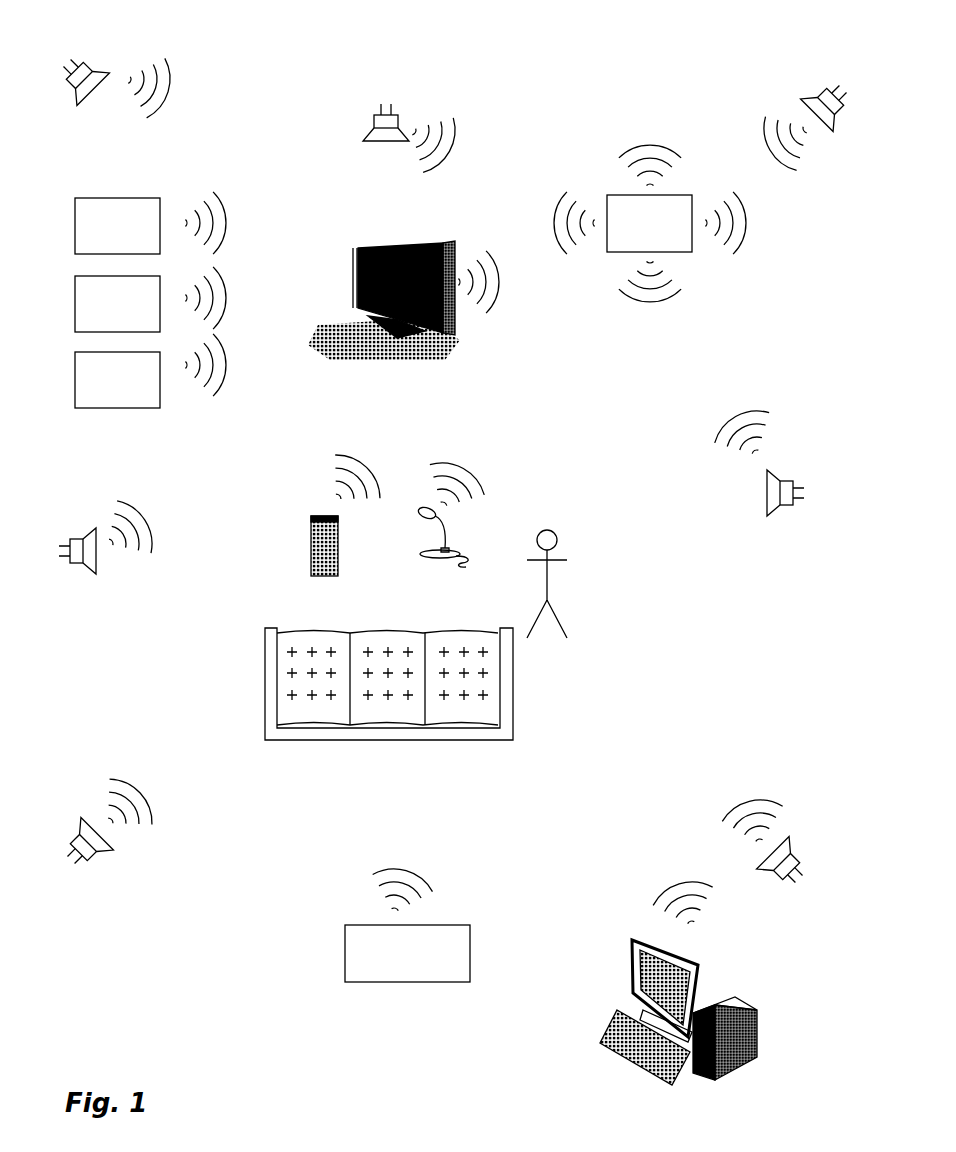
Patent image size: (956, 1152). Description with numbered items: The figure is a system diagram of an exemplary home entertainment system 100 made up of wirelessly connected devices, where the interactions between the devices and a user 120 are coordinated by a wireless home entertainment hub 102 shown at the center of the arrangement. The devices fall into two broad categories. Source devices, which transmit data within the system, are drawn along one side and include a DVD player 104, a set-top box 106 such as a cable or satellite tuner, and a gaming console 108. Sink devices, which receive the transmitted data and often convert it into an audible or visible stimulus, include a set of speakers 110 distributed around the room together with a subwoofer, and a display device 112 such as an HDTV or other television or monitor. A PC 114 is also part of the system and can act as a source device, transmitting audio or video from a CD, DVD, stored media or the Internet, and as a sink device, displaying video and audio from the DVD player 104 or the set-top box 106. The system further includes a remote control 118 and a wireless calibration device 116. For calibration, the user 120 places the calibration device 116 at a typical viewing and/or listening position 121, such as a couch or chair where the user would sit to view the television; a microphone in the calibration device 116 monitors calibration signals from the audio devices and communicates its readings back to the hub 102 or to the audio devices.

The home entertainment system 100 is at (624, 88).
The wireless home entertainment hub 102 is at (688, 196).
The DVD player 104 is at (76, 366).
The set-top box 106 is at (76, 290).
The gaming console 108 is at (76, 215).
The speakers 110 is at (96, 64).
The display device 112 is at (353, 278).
The PC 114 is at (737, 997).
The calibration device 116 is at (447, 537).
The remote control 118 is at (311, 535).
The user 120 is at (556, 528).
The viewing and/or listening position 121 is at (265, 668).